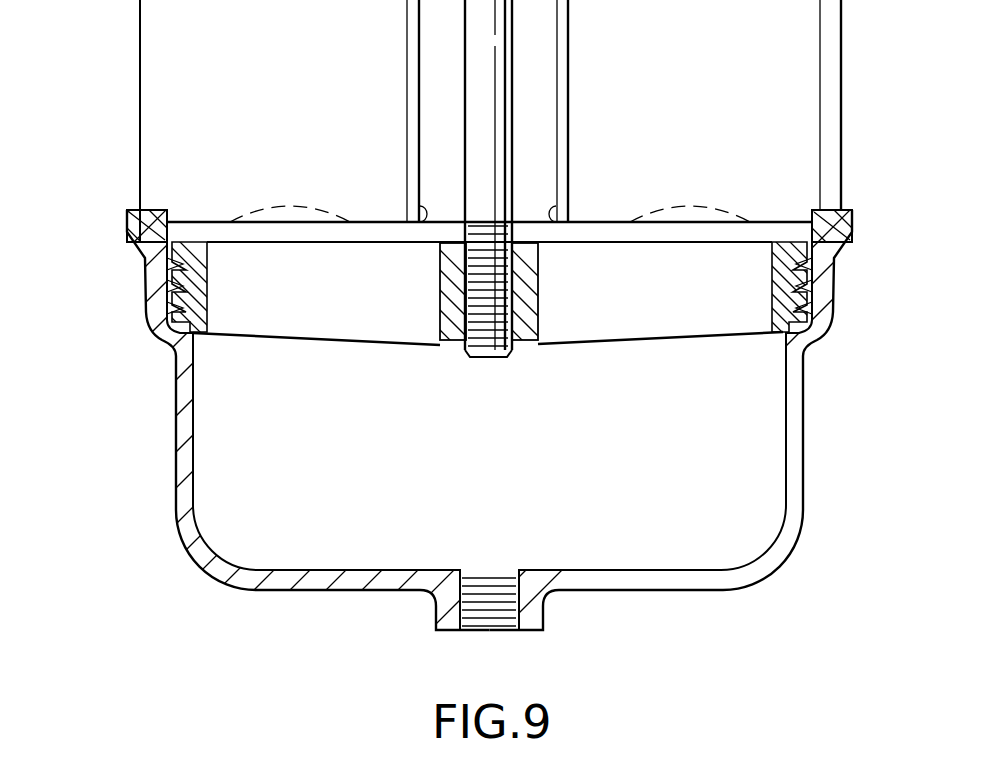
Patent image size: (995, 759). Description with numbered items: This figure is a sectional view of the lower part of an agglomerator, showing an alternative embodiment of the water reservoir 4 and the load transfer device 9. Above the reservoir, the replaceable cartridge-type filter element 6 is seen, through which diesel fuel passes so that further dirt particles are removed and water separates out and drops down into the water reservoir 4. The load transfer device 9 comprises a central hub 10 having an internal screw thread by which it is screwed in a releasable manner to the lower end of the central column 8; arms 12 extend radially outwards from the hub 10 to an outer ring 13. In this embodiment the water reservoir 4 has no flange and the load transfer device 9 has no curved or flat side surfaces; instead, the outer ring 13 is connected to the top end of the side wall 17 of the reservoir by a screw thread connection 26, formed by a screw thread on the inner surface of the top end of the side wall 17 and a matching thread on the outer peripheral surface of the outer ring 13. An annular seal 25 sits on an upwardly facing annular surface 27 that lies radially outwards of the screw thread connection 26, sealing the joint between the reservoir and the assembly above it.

The water reservoir 4 is at (805, 468).
The filter element 6 is at (140, 86).
The central column 8 is at (512, 108).
The load transfer device 9 is at (650, 350).
The central hub 10 is at (530, 346).
The arms 12 is at (327, 322).
The outer ring 13 is at (780, 334).
The side wall 17 is at (193, 462).
The annular seal 25 is at (822, 210).
The screw thread connection 26 is at (788, 230).
The upwardly facing annular surface 27 is at (832, 262).